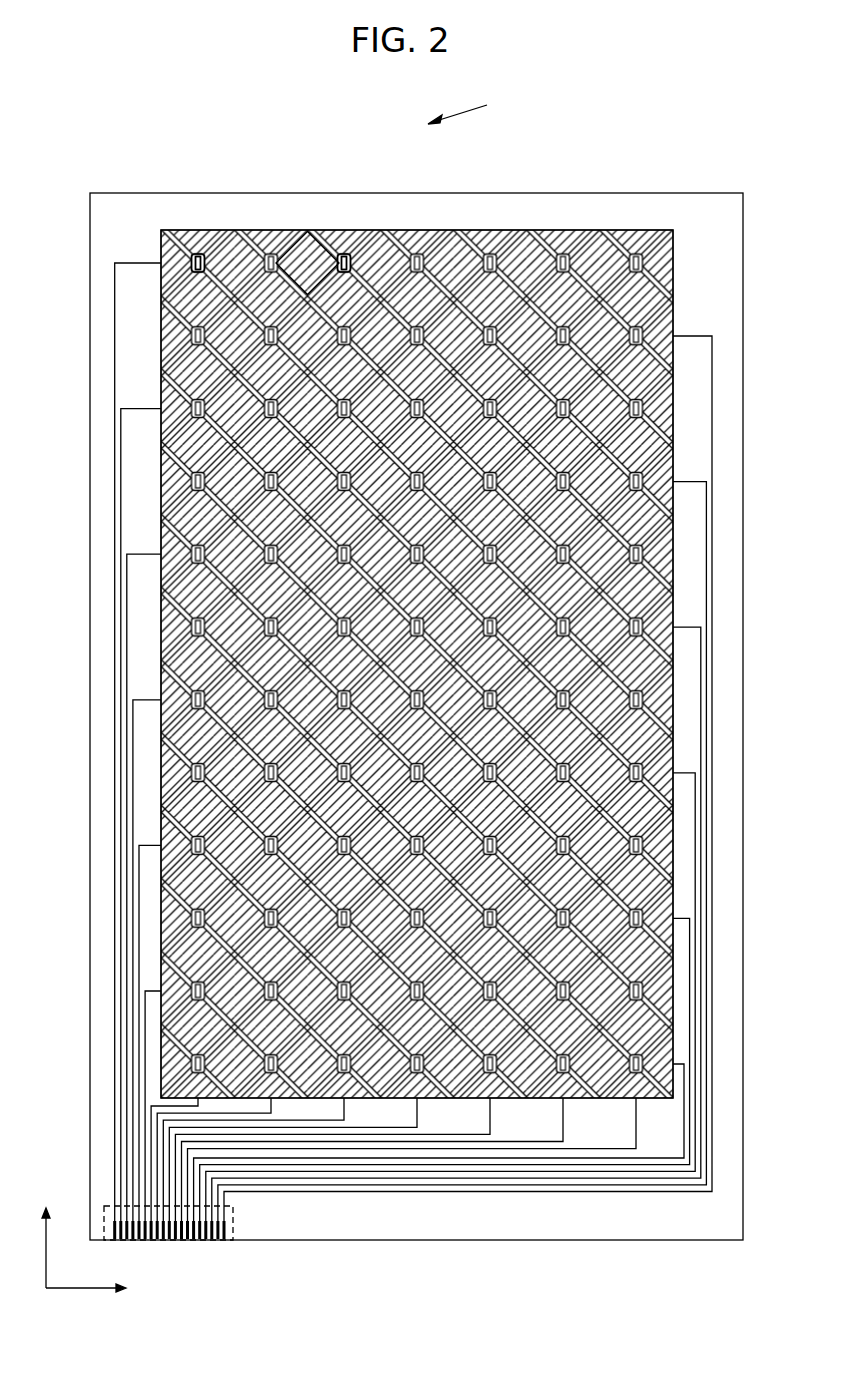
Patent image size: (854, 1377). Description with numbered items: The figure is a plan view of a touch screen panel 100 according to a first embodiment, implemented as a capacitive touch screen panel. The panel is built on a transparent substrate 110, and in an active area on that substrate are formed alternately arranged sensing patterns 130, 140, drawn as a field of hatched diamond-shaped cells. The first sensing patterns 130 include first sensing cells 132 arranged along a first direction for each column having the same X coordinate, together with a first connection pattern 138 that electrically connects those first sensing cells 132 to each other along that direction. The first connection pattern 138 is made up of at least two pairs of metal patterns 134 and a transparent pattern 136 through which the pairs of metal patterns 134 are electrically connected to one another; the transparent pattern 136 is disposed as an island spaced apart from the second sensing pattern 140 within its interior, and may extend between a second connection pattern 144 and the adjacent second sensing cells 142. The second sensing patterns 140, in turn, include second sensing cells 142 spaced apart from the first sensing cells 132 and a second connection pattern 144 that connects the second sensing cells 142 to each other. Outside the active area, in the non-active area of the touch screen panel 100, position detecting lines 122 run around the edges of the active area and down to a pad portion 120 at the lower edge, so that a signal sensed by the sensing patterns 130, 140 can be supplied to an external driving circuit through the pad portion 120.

The touch screen panel 100 is at (755, 129).
The transparent substrate 110 is at (538, 185).
The pad portion 120 is at (228, 1215).
The position detecting lines 122 is at (106, 290).
The first sensing patterns 130 is at (350, 190).
The first sensing cells 132 is at (314, 246).
The metal patterns 134 is at (331, 246).
The transparent pattern 136 is at (363, 252).
The first connection pattern 138 is at (381, 194).
The second sensing patterns 140 is at (204, 193).
The second sensing cells 142 is at (181, 246).
The second connection pattern 144 is at (194, 244).